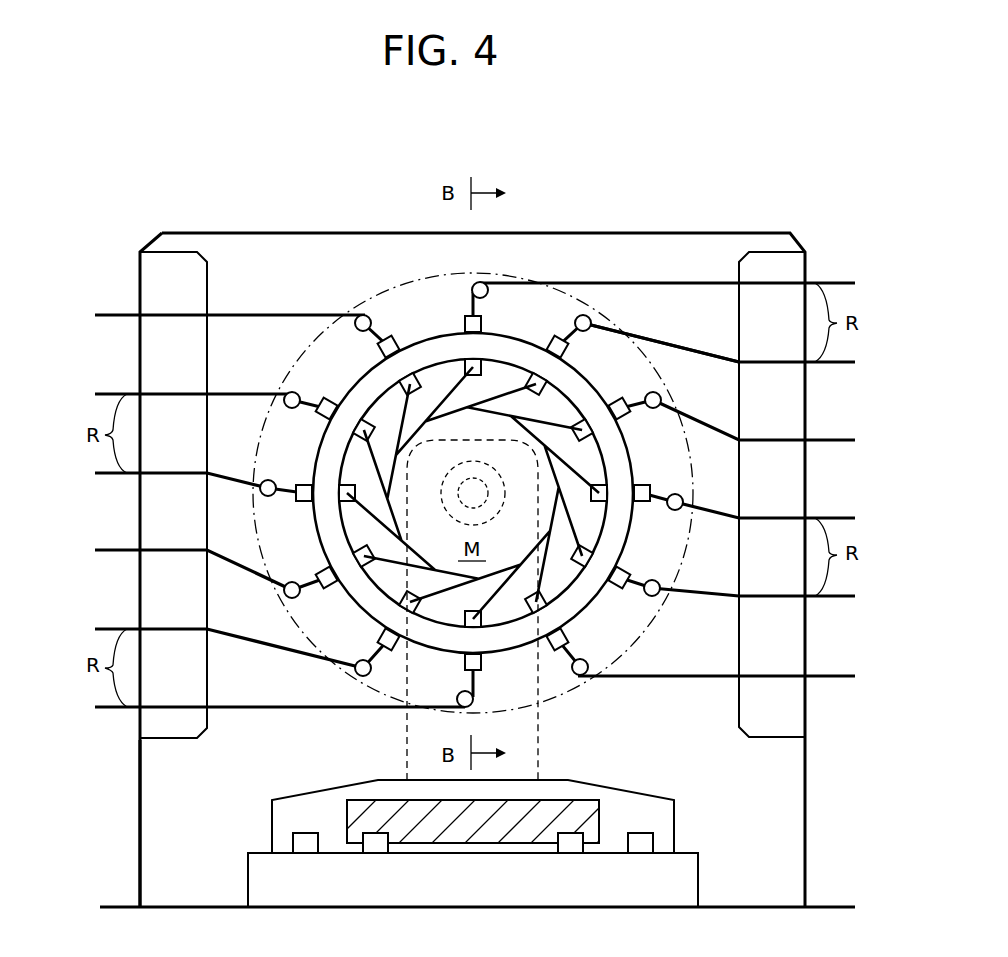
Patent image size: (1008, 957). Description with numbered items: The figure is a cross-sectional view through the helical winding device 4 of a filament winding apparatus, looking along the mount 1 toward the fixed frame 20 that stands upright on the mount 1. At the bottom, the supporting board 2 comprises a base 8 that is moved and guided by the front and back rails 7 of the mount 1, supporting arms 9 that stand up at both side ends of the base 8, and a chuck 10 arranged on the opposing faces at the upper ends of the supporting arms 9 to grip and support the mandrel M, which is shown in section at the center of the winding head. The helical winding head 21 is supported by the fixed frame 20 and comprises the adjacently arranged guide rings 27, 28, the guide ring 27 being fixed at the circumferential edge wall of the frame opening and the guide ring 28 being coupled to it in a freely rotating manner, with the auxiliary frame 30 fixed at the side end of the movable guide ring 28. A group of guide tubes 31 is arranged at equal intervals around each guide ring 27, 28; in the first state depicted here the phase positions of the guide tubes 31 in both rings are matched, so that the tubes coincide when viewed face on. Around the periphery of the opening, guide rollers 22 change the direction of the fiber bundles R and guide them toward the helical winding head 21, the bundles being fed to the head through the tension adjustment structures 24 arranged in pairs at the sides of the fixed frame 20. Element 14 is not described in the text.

The mount 1 is at (450, 888).
The supporting board 2 is at (445, 850).
The helical winding device 4 is at (658, 230).
The rails 7 is at (571, 851).
The base 8 is at (490, 832).
The supporting arms 9 is at (552, 698).
The chuck 10 is at (455, 462).
The stoppers 14 is at (640, 838).
The fixed frame 20 is at (162, 770).
The helical winding head 21 is at (411, 326).
The guide roller 22 is at (588, 665).
The tension adjustment structure 24 is at (172, 270).
The guide ring 27 is at (661, 342).
The guide ring 28 is at (618, 333).
The auxiliary frame 30 is at (378, 290).
The guide tubes 31 is at (628, 576).